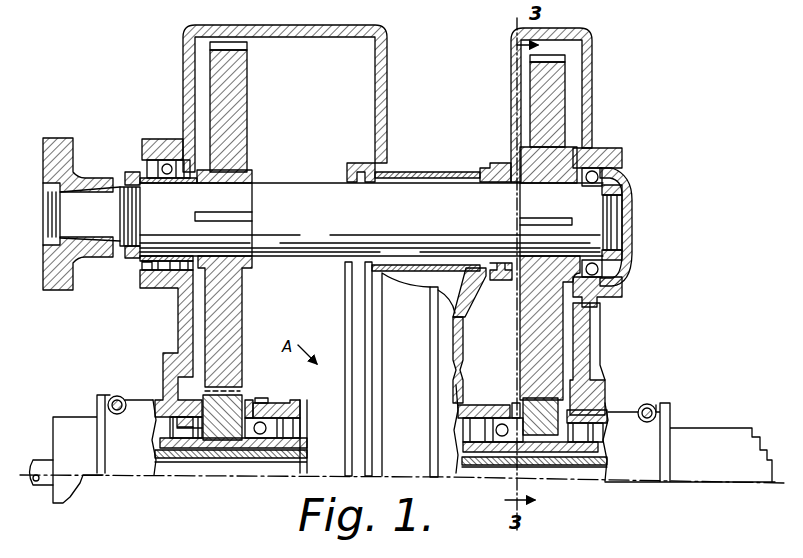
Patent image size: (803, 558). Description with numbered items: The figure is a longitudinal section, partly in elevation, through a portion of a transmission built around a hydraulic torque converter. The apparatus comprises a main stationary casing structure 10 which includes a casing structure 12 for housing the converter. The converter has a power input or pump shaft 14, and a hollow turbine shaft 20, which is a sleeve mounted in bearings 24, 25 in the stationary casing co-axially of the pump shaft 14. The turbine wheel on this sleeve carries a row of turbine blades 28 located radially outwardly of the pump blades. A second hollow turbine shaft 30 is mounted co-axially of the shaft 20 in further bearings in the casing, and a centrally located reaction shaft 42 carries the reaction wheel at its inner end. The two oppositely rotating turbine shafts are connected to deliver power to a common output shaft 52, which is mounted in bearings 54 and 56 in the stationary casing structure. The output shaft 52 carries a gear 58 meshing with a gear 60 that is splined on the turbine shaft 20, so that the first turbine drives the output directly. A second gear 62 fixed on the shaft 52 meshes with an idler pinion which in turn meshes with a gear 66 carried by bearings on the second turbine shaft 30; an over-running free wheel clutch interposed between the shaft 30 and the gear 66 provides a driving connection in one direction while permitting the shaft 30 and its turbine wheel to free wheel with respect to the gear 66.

The main stationary casing structure 10 is at (183, 74).
The casing structure 12 is at (313, 355).
The pump shaft 14 is at (45, 478).
The hollow turbine shaft 20 is at (278, 460).
The bearing 24 is at (283, 416).
The bearing 25 is at (258, 412).
The turbine blades 28 is at (178, 428).
The second hollow turbine shaft 30 is at (560, 465).
The reaction shaft 42 is at (598, 466).
The output shaft 52 is at (282, 190).
The bearing 54 is at (174, 164).
The bearing 56 is at (592, 160).
The gear 58 is at (241, 315).
The gear 60 is at (208, 400).
The second gear 62 is at (534, 304).
The gear 66 is at (522, 401).